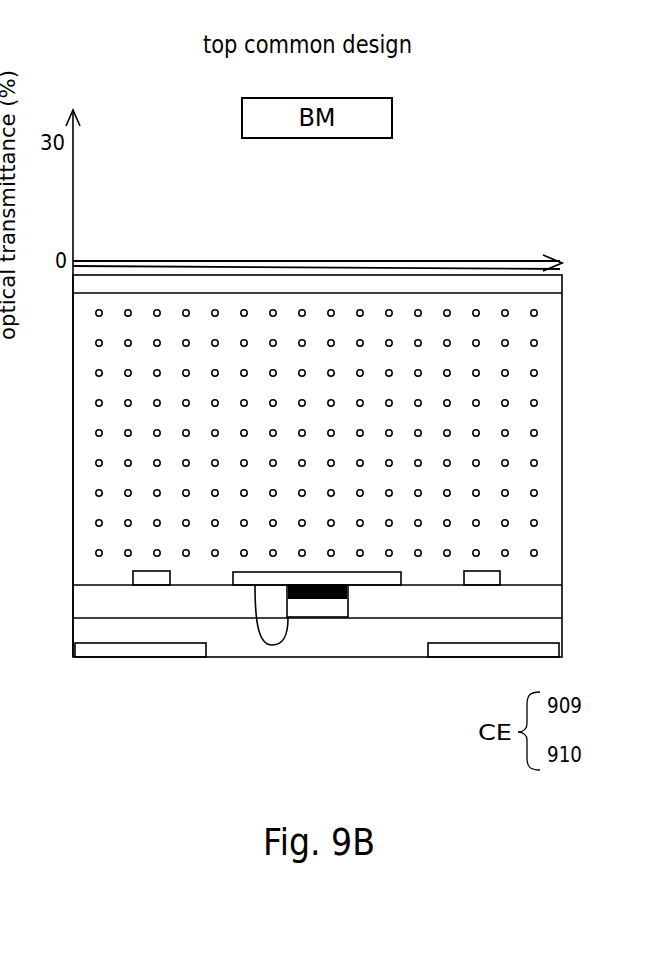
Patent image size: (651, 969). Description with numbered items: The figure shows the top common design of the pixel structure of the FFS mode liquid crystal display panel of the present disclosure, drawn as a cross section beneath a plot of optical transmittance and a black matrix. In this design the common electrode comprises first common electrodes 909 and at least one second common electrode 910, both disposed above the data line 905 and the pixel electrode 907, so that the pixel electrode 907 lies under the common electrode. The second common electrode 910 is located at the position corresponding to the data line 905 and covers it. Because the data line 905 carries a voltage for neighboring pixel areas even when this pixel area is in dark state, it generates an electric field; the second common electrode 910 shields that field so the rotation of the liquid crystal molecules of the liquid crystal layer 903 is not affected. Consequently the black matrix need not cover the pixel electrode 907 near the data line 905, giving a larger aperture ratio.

The liquid crystal layer 903 is at (528, 456).
The data line 905 is at (302, 607).
The pixel electrode 907 is at (105, 650).
The first common electrodes 909 is at (135, 578).
The second common electrode 910 is at (385, 580).